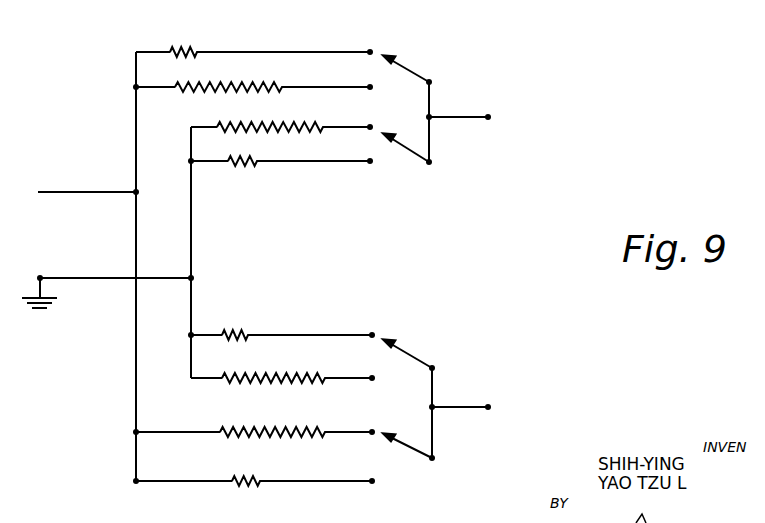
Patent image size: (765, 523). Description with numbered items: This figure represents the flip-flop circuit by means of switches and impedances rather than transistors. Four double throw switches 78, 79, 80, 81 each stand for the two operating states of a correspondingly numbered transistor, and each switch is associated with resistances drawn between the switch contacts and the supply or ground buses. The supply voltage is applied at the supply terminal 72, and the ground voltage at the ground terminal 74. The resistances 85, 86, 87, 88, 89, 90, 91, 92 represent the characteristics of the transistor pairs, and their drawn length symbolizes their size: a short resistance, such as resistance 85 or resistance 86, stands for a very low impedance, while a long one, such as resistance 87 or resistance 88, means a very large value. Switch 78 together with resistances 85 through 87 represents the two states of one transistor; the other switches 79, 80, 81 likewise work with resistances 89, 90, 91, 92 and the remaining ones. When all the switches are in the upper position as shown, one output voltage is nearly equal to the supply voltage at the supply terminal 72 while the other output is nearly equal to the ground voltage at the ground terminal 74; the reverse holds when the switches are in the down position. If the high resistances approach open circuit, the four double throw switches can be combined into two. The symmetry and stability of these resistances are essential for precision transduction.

The supply voltage terminal 72 is at (60, 190).
The ground voltage terminal 74 is at (58, 277).
The switch 78 is at (410, 63).
The switch 79 is at (412, 157).
The switch 80 is at (417, 462).
The switch 81 is at (412, 352).
The resistance 85 is at (178, 45).
The resistance 86 is at (248, 473).
The resistance 87 is at (227, 78).
The resistance 88 is at (253, 425).
The resistance 89 is at (255, 123).
The resistance 90 is at (252, 373).
The resistance 91 is at (260, 153).
The resistance 92 is at (238, 327).